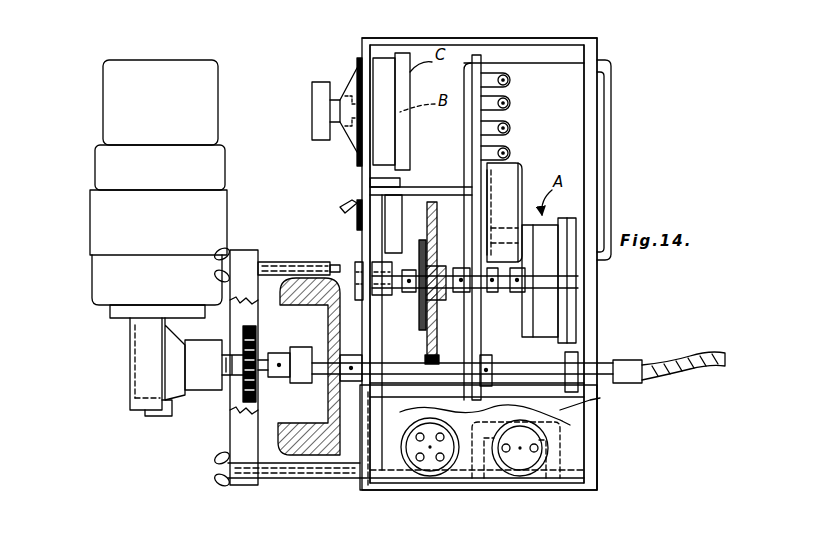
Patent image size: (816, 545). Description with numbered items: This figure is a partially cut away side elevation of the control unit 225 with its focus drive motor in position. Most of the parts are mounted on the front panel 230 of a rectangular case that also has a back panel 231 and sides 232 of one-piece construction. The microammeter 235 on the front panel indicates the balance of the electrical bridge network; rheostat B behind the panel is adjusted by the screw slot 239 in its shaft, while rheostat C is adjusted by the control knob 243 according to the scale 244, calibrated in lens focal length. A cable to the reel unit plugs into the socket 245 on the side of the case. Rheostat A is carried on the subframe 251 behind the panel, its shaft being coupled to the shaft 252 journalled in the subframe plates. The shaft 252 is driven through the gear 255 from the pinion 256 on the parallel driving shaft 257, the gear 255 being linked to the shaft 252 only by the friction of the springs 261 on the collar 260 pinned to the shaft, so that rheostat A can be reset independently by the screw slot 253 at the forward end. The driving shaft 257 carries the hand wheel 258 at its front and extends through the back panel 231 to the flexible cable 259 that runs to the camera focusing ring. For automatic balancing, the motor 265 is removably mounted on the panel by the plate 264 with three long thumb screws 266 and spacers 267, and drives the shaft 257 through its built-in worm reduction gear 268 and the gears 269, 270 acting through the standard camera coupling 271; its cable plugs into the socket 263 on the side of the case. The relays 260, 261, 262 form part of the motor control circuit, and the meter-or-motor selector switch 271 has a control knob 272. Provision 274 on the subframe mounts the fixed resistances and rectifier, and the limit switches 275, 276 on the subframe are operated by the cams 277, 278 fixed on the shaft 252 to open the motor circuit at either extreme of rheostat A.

The control unit 225 is at (618, 180).
The front panel 230 is at (362, 176).
The back panel 231 is at (593, 308).
The sides 232 is at (518, 38).
The microammeter 235 is at (309, 370).
The screw slot 239 is at (342, 100).
The control knob 243 is at (312, 98).
The scale 244 is at (358, 60).
The socket 245 is at (500, 470).
The subframe 251 is at (462, 187).
The shaft 252 is at (435, 302).
The screw slot 253 is at (362, 288).
The gear 255 is at (442, 224).
The pinion 256 is at (445, 365).
The driving shaft 257 is at (415, 330).
The hand wheel 258 is at (305, 452).
The flexible cable 259 is at (680, 353).
The collar 260 is at (562, 63).
The springs 261 is at (420, 312).
The relay 262 is at (586, 432).
The socket 263 is at (434, 478).
The plate 264 is at (238, 437).
The motor 265 is at (95, 172).
The thumb screws 266 is at (368, 472).
The spacers 267 is at (330, 480).
The worm reduction gear 268 is at (135, 364).
The gear 269 is at (272, 353).
The gear 270 is at (243, 393).
The camera coupling 271 is at (402, 210).
The control knob 272 is at (340, 206).
The mounting provision 274 is at (512, 128).
The limit switch 275 is at (524, 160).
The limit switch 276 is at (525, 200).
The cam 277 is at (498, 290).
The cam 278 is at (522, 286).